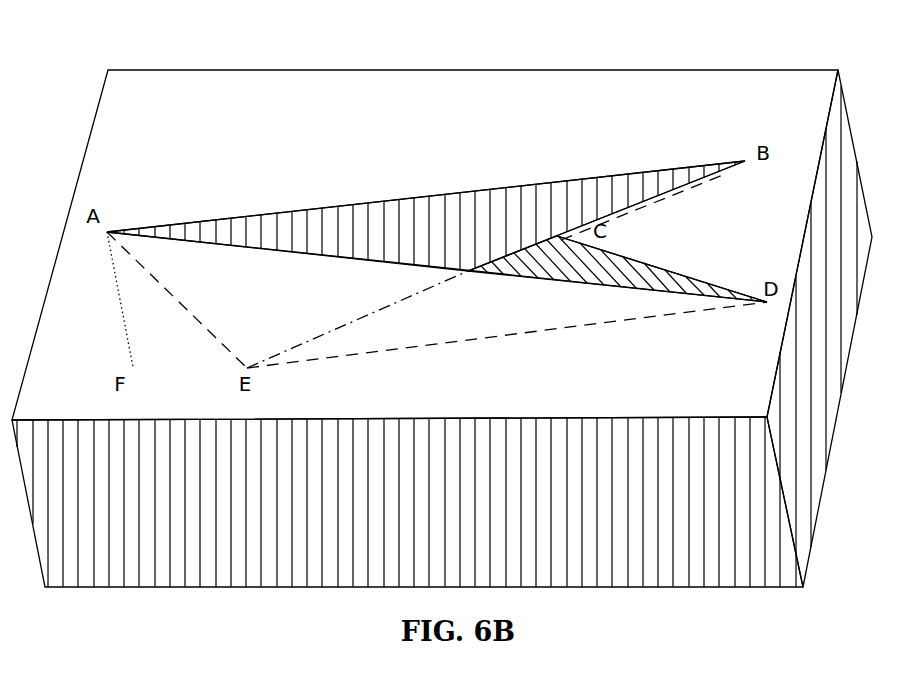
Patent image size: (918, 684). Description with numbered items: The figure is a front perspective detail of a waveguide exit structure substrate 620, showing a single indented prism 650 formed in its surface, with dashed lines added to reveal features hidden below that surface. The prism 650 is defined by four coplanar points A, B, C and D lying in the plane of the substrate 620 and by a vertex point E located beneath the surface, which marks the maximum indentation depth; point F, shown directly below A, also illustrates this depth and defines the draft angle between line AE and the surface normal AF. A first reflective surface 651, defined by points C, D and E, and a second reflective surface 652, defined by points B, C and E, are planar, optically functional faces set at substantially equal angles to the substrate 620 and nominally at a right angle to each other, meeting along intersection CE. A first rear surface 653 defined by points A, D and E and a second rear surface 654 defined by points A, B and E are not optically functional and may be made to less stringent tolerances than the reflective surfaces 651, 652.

The waveguide exit structure substrate 620 is at (519, 105).
The indented prism 650 is at (343, 148).
The first reflective surface 651 is at (592, 271).
The second reflective surface 652 is at (466, 277).
The first rear surface 653 is at (245, 320).
The second rear surface 654 is at (450, 239).